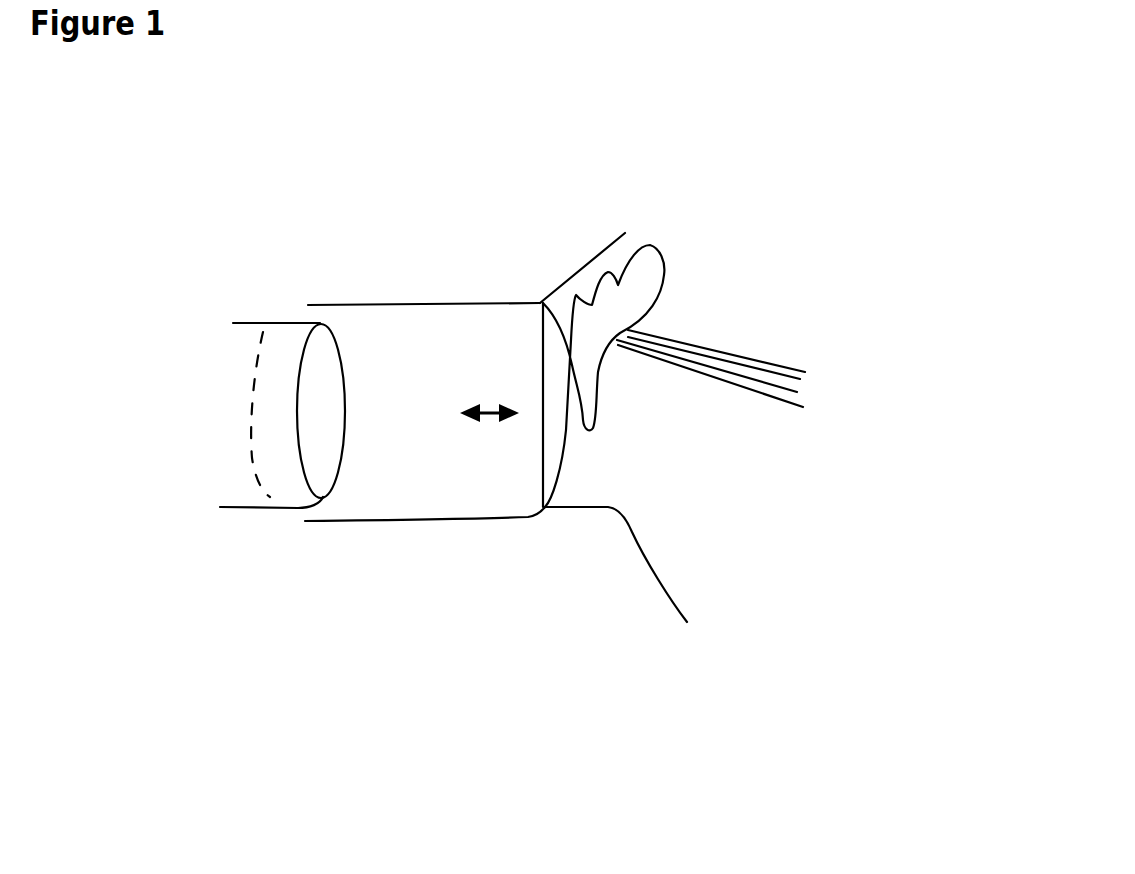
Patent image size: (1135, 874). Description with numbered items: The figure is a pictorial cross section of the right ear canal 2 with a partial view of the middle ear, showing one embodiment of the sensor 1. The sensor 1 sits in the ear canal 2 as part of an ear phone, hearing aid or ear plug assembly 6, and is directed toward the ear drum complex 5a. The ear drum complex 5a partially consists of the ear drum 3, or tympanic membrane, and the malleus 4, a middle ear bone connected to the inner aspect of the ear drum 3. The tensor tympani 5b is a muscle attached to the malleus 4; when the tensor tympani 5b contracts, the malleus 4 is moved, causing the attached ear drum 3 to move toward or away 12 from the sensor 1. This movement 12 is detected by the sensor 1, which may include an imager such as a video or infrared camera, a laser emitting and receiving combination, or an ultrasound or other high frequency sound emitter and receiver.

The sensor 1 is at (290, 515).
The ear canal 2 is at (393, 543).
The ear drum 3 is at (588, 450).
The malleus 4 is at (685, 243).
The ear drum complex 5a is at (908, 152).
The tensor tympani 5b is at (732, 333).
The ear phone, hearing aid or ear plug assembly 6 is at (238, 515).
The movement towards or away from the sensor 12 is at (488, 442).